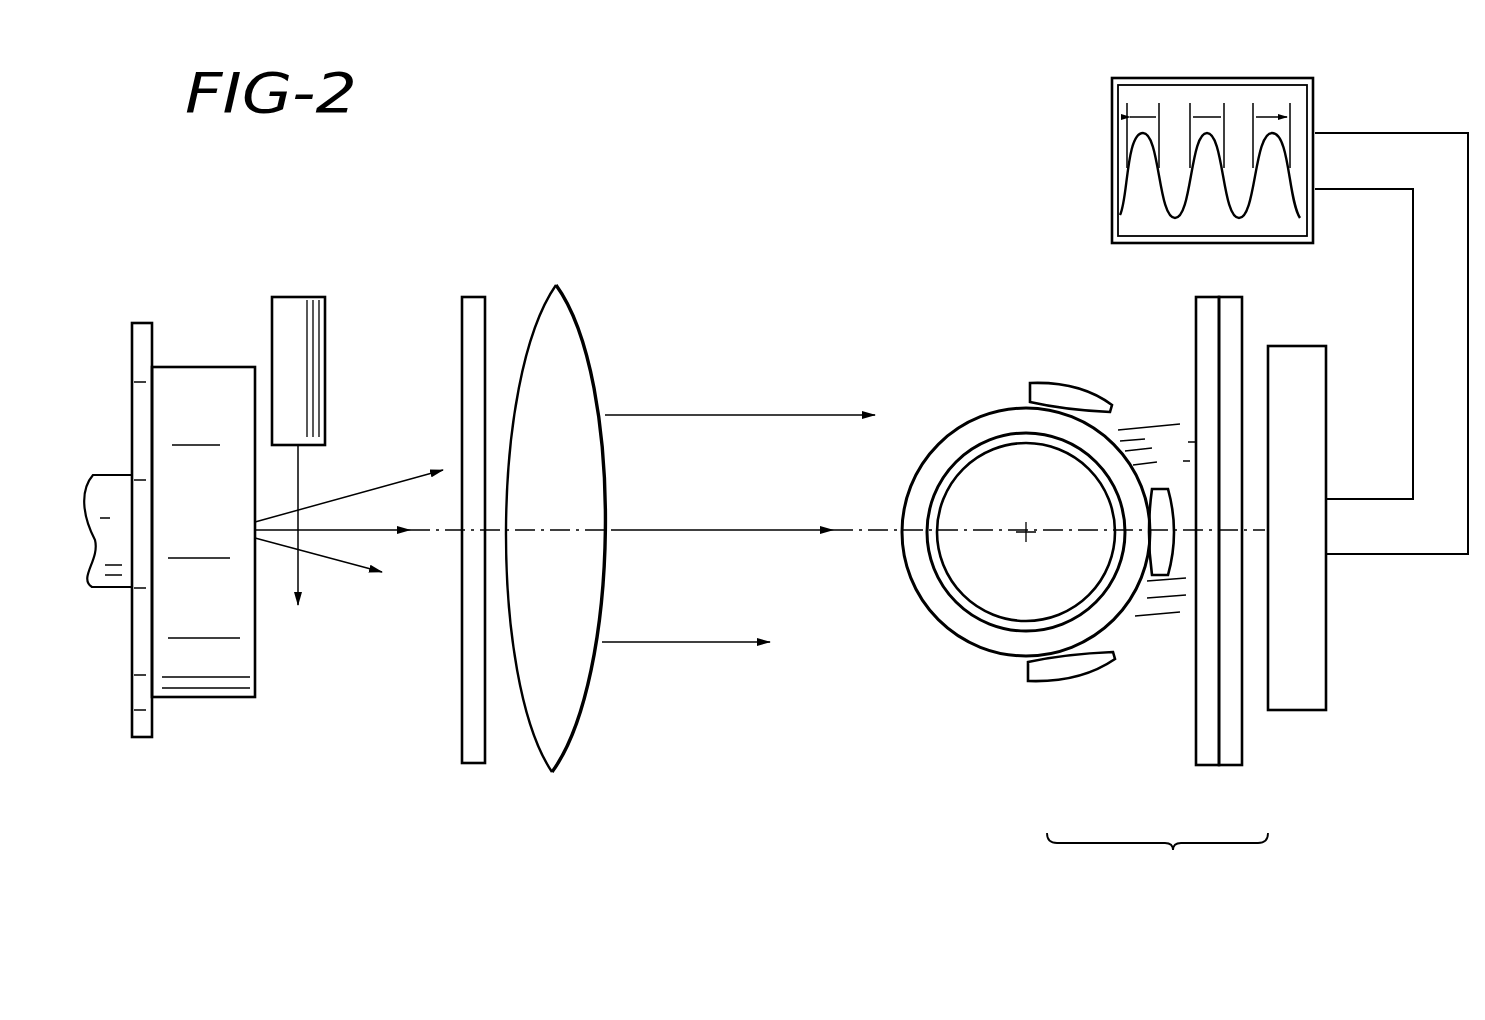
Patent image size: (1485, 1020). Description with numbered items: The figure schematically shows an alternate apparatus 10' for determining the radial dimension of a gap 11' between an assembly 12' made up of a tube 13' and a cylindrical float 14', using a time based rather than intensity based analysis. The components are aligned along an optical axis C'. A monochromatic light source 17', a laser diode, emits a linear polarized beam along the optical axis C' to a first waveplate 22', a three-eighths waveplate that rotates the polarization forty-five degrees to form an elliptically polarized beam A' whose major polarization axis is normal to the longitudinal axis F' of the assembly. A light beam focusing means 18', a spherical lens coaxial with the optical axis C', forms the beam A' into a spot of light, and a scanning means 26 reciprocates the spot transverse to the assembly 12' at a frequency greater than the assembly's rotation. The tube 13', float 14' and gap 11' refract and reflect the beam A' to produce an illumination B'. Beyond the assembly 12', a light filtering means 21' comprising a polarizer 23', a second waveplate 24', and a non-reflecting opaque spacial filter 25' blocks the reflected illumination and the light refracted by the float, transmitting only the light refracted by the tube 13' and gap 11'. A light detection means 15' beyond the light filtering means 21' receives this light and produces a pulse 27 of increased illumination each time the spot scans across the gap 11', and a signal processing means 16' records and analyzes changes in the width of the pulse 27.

The apparatus 10' is at (837, 442).
The gap 11' is at (1007, 510).
The assembly 12' is at (1026, 485).
The tube 13' is at (1150, 497).
The cylindrical float 14' is at (1006, 563).
The light detection means 15' is at (1368, 425).
The signal processing means 16' is at (1149, 160).
The monochromatic light source 17' is at (263, 502).
The light beam focusing means 18' is at (580, 548).
The light filtering means 21' is at (1157, 858).
The first waveplate 22' is at (471, 566).
The polarizer 23' is at (1182, 554).
The detector backing plate 24' is at (1264, 554).
The spacial filter 25' is at (1085, 525).
The scanning means 26 is at (297, 297).
The pulse 27 is at (1133, 160).
The elliptically polarized beam of light A' is at (363, 453).
The illumination B' is at (1151, 672).
The optical axis C' is at (732, 493).
The longitudinal axis F' is at (946, 570).